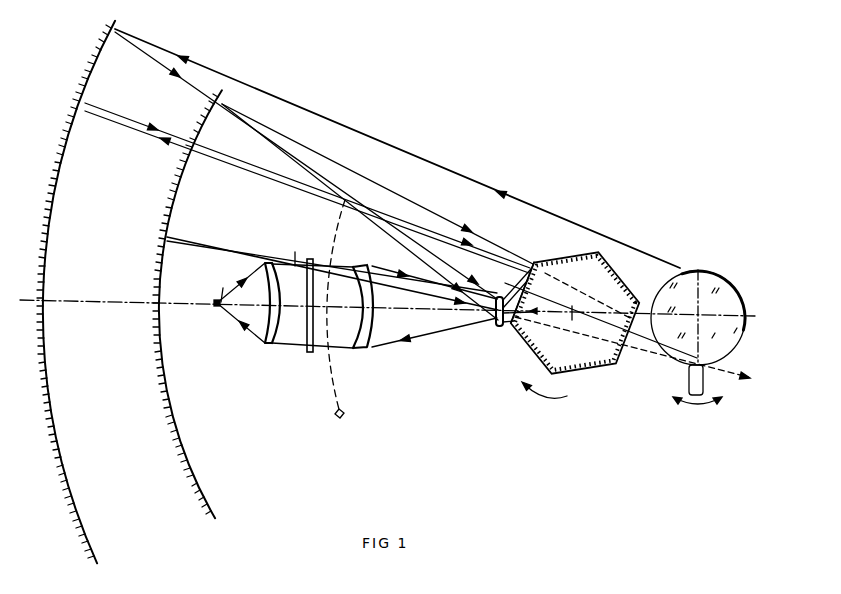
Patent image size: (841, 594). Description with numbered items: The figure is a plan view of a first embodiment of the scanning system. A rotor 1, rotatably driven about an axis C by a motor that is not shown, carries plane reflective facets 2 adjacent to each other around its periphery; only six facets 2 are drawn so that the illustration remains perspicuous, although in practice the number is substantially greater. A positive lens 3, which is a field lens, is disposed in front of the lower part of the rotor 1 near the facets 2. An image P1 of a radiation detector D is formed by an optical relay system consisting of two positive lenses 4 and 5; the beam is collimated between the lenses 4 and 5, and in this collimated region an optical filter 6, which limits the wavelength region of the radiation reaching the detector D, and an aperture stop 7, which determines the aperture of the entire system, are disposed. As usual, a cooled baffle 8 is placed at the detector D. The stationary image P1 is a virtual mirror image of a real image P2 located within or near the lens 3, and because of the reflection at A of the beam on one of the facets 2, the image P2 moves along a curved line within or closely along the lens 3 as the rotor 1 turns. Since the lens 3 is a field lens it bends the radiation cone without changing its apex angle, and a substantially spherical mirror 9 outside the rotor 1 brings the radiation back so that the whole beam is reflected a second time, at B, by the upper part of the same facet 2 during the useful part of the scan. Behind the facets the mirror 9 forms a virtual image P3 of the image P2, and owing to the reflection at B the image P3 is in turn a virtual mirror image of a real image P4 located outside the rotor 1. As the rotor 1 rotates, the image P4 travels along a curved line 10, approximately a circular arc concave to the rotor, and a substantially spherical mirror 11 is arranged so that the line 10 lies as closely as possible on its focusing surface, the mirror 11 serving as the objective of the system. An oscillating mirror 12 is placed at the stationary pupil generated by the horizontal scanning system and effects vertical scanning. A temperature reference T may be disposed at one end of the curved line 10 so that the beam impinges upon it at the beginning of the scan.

The rotor 1 is at (601, 358).
The reflective facets 2 is at (525, 240).
The positive lens (field lens) 3 is at (498, 329).
The positive lens 4 is at (362, 350).
The positive lens 5 is at (266, 346).
The optical filter 6 is at (311, 353).
The aperture stop 7 is at (291, 345).
The cooled baffle 8 is at (219, 312).
The substantially spherical mirror 9 is at (197, 482).
The curved line 10 is at (330, 403).
The substantially spherical mirror 11 is at (80, 521).
The oscillating mirror 12 is at (705, 271).
The reflection point A is at (514, 332).
The reflection point B is at (563, 255).
The rotor axis C is at (572, 320).
The radiation detector D is at (214, 309).
The temperature reference T is at (336, 419).
The image of the detector P1 is at (540, 175).
The real image P2 is at (497, 325).
The virtual image P3 is at (738, 405).
The real image P4 is at (345, 197).